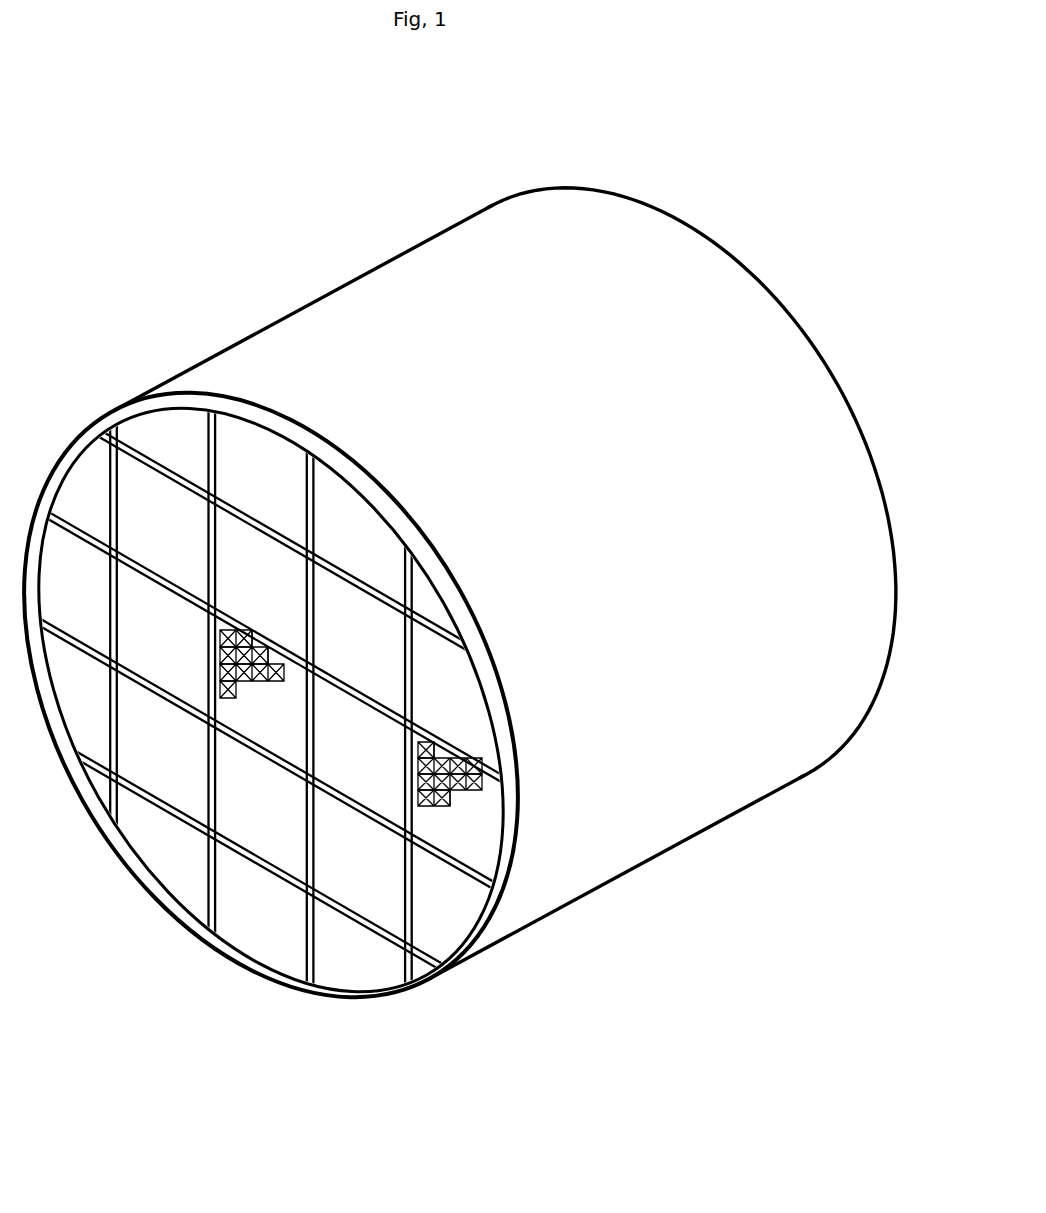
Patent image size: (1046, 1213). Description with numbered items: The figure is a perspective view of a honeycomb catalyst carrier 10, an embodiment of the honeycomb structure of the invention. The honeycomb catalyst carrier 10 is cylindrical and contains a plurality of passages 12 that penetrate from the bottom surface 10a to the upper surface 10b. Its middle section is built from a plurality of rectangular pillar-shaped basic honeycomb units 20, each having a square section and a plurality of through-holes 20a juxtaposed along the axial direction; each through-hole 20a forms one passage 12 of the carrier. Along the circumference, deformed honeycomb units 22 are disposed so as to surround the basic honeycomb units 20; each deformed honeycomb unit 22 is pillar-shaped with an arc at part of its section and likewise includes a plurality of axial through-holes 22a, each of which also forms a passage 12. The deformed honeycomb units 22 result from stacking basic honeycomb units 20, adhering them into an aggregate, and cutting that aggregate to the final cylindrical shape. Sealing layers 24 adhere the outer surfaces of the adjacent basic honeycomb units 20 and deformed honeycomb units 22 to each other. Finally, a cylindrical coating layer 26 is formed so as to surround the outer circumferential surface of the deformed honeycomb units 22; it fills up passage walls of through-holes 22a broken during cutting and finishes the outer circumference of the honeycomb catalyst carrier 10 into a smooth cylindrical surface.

The honeycomb catalyst carrier 10 is at (361, 185).
The bottom surface 10a is at (367, 847).
The upper surface 10b is at (783, 297).
The passage 12 is at (439, 615).
The basic honeycomb unit 20 is at (256, 657).
The through-hole 20a is at (207, 633).
The deformed honeycomb unit 22 is at (453, 675).
The through-hole 22a is at (423, 805).
The sealing layer 24 is at (113, 518).
The coating layer 26 is at (83, 447).